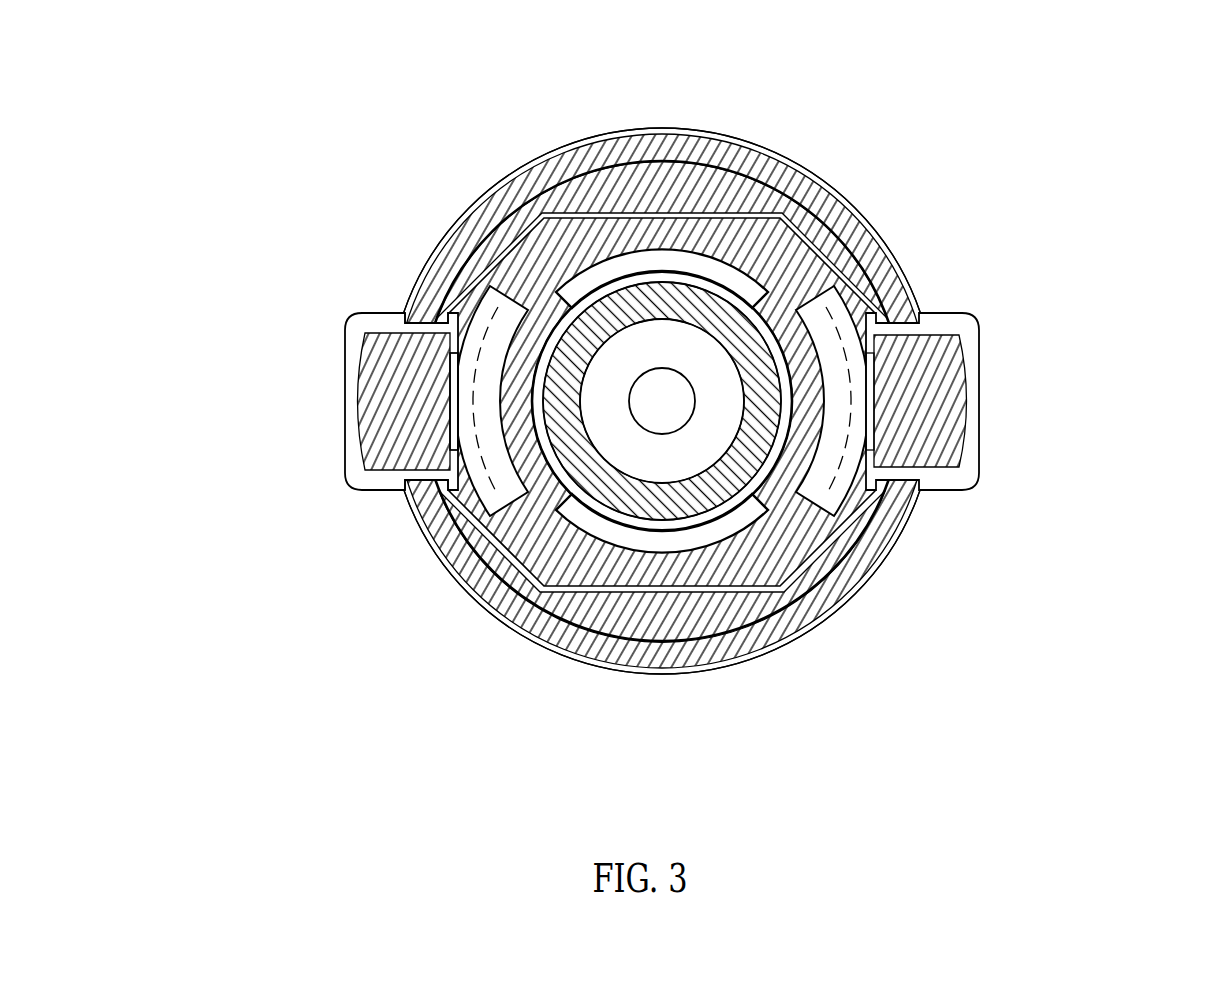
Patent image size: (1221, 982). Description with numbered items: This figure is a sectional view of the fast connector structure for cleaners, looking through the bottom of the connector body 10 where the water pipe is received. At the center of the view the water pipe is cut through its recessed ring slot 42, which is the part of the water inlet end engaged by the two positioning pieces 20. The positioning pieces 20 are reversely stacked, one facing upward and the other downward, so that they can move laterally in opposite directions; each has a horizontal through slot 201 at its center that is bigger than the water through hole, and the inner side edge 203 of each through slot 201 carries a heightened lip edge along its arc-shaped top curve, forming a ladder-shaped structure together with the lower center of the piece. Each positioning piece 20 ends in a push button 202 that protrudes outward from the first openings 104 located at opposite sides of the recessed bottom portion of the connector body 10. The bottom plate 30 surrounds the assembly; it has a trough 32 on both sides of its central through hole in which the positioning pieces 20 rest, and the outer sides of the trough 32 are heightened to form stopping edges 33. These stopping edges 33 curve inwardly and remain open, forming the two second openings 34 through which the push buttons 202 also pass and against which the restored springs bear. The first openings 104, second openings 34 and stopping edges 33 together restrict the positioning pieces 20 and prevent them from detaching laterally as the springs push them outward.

The connector body 10 is at (922, 524).
The positioning pieces 20 is at (537, 256).
The bottom plate 30 is at (640, 129).
The trough 32 is at (728, 168).
The stopping edges 33 is at (875, 256).
The second openings 34 is at (450, 480).
The recessed ring slot 42 is at (918, 333).
The first openings 104 is at (398, 311).
The horizontal through slot 201 is at (660, 535).
The push button 202 is at (365, 388).
The inner side edge 203 is at (545, 592).